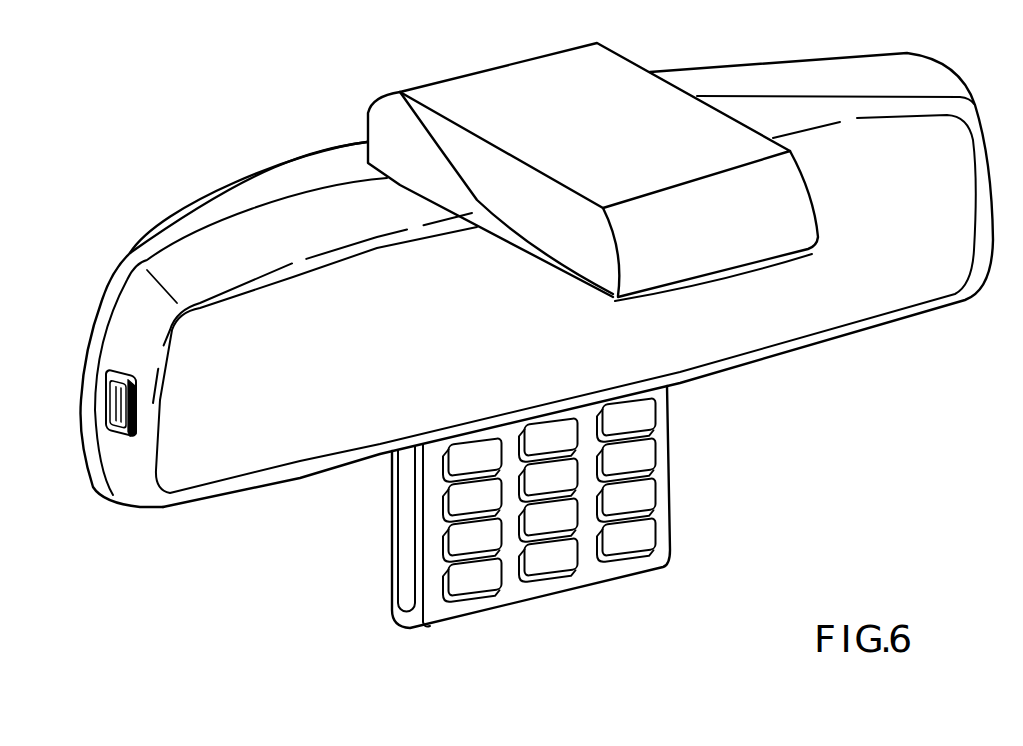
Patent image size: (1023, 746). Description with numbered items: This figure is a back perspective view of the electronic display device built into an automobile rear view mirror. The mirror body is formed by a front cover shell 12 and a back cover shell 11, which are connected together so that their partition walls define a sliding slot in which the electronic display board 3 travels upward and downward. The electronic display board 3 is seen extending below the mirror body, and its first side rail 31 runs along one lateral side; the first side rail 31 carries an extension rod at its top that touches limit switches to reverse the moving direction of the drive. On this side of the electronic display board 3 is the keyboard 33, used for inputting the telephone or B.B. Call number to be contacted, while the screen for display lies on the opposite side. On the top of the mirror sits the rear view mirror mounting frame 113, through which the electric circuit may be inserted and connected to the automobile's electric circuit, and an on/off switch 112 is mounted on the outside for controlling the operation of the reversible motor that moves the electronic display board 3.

The electronic display board 3 is at (551, 528).
The back cover shell 11 is at (177, 497).
The front cover shell 12 is at (190, 223).
The first side rail 31 is at (407, 573).
The keyboard 33 is at (647, 540).
The on/off switch 112 is at (113, 432).
The rear view mirror mounting frame 113 is at (457, 95).